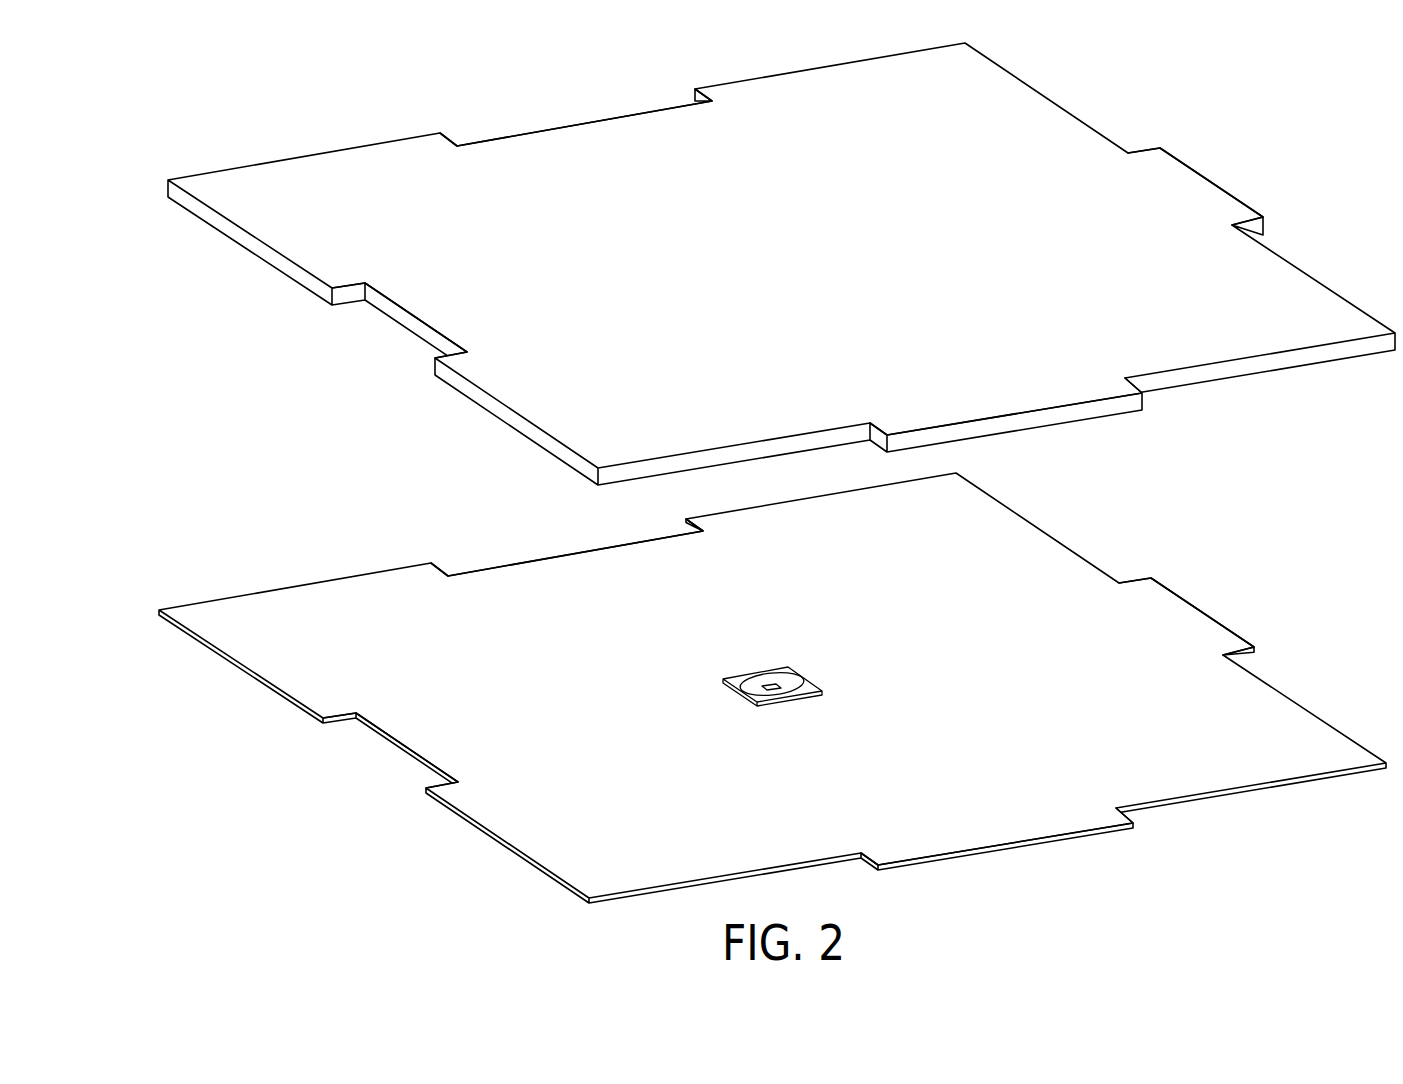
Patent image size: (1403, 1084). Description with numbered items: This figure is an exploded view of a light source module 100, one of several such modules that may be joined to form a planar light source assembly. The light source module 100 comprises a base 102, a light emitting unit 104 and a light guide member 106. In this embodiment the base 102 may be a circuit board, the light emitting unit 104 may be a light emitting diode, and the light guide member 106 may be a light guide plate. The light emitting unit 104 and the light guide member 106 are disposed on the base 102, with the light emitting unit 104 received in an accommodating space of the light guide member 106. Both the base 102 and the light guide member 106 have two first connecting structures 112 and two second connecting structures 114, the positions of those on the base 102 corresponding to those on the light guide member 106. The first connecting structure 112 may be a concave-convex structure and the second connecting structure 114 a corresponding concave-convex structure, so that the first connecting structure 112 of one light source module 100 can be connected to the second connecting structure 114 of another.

The light source module 100 is at (222, 112).
The base 102 is at (793, 870).
The light emitting unit 104 is at (740, 689).
The light guide member 106 is at (255, 247).
The first connecting structure 112 is at (1213, 182).
The second connecting structure 114 is at (580, 117).